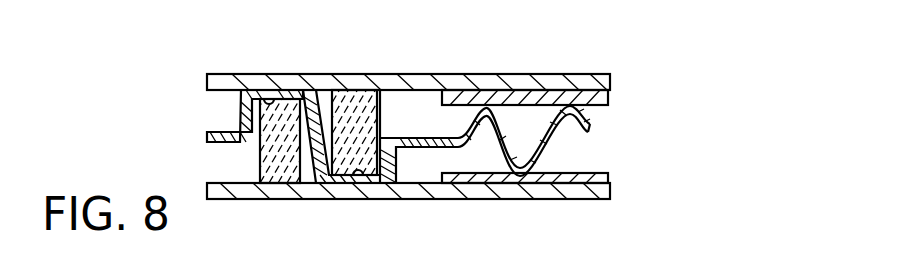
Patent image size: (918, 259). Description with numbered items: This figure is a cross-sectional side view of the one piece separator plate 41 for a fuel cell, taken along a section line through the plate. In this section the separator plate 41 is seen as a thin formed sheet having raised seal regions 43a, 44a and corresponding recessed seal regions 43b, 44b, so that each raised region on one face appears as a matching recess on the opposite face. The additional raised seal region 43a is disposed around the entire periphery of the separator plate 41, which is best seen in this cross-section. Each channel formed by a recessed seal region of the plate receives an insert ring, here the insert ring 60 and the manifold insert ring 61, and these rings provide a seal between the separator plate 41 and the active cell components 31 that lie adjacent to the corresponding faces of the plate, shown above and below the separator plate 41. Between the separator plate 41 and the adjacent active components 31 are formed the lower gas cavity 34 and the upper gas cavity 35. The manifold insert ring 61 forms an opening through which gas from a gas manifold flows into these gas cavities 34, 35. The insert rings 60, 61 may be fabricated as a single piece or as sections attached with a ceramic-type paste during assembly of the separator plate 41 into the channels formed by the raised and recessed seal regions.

The active cell components 31 is at (500, 76).
The lower gas cavity 34 is at (492, 167).
The upper gas cavity 35 is at (420, 128).
The separator plate 41 is at (592, 128).
The raised seal region 43a is at (285, 84).
The recessed seal region 43b is at (268, 102).
The raised seal region 44a is at (358, 173).
The recessed seal region 44b is at (369, 185).
The insert ring 60 is at (277, 178).
The manifold insert ring 61 is at (360, 97).